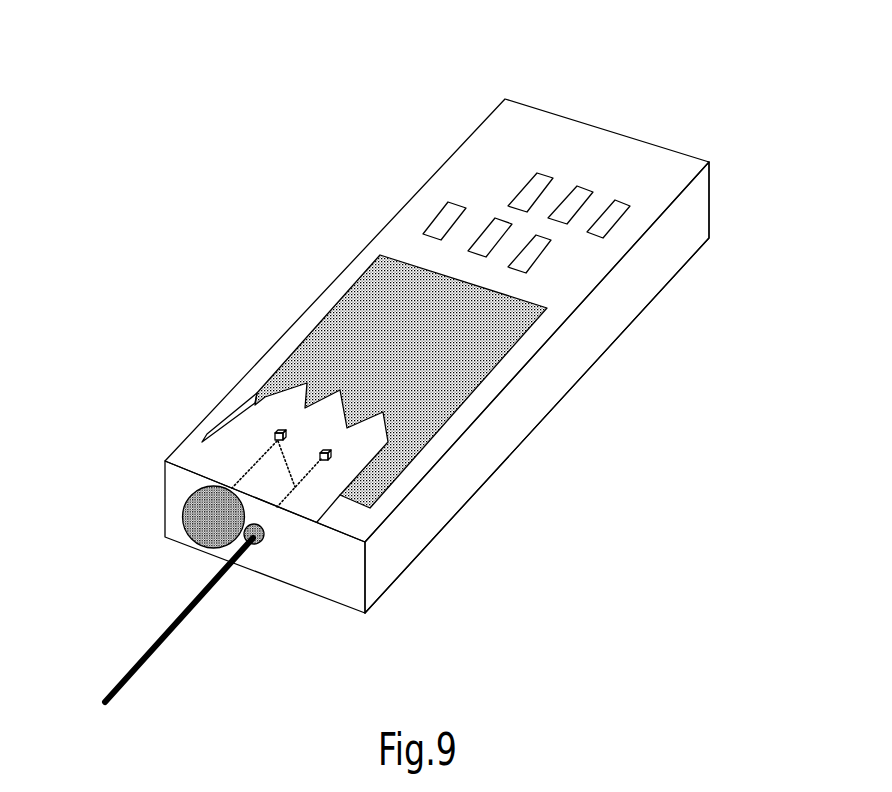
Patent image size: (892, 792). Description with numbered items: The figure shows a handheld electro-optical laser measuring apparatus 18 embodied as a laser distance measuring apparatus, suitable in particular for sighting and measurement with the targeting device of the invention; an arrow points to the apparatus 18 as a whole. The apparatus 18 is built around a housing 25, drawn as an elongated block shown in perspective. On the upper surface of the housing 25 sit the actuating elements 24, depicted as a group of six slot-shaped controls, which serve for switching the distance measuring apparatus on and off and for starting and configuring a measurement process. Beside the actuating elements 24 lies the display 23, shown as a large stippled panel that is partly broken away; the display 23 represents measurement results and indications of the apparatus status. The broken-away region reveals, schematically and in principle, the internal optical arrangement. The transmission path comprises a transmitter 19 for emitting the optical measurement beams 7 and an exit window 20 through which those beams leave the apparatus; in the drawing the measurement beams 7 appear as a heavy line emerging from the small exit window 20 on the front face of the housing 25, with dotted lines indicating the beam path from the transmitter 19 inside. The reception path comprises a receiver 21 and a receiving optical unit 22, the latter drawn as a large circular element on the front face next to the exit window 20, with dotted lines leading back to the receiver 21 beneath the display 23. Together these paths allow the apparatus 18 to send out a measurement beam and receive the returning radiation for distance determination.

The sensor module housing 18 is at (205, 224).
The actuating elements 24 is at (527, 197).
The display 23 is at (458, 372).
The housing 25 is at (638, 283).
The receiver 21 is at (273, 438).
The transmitter 19 is at (332, 455).
The receiving optical unit 22 is at (190, 540).
The exit window 20 is at (263, 540).
The optical measurement beams 7 is at (157, 650).